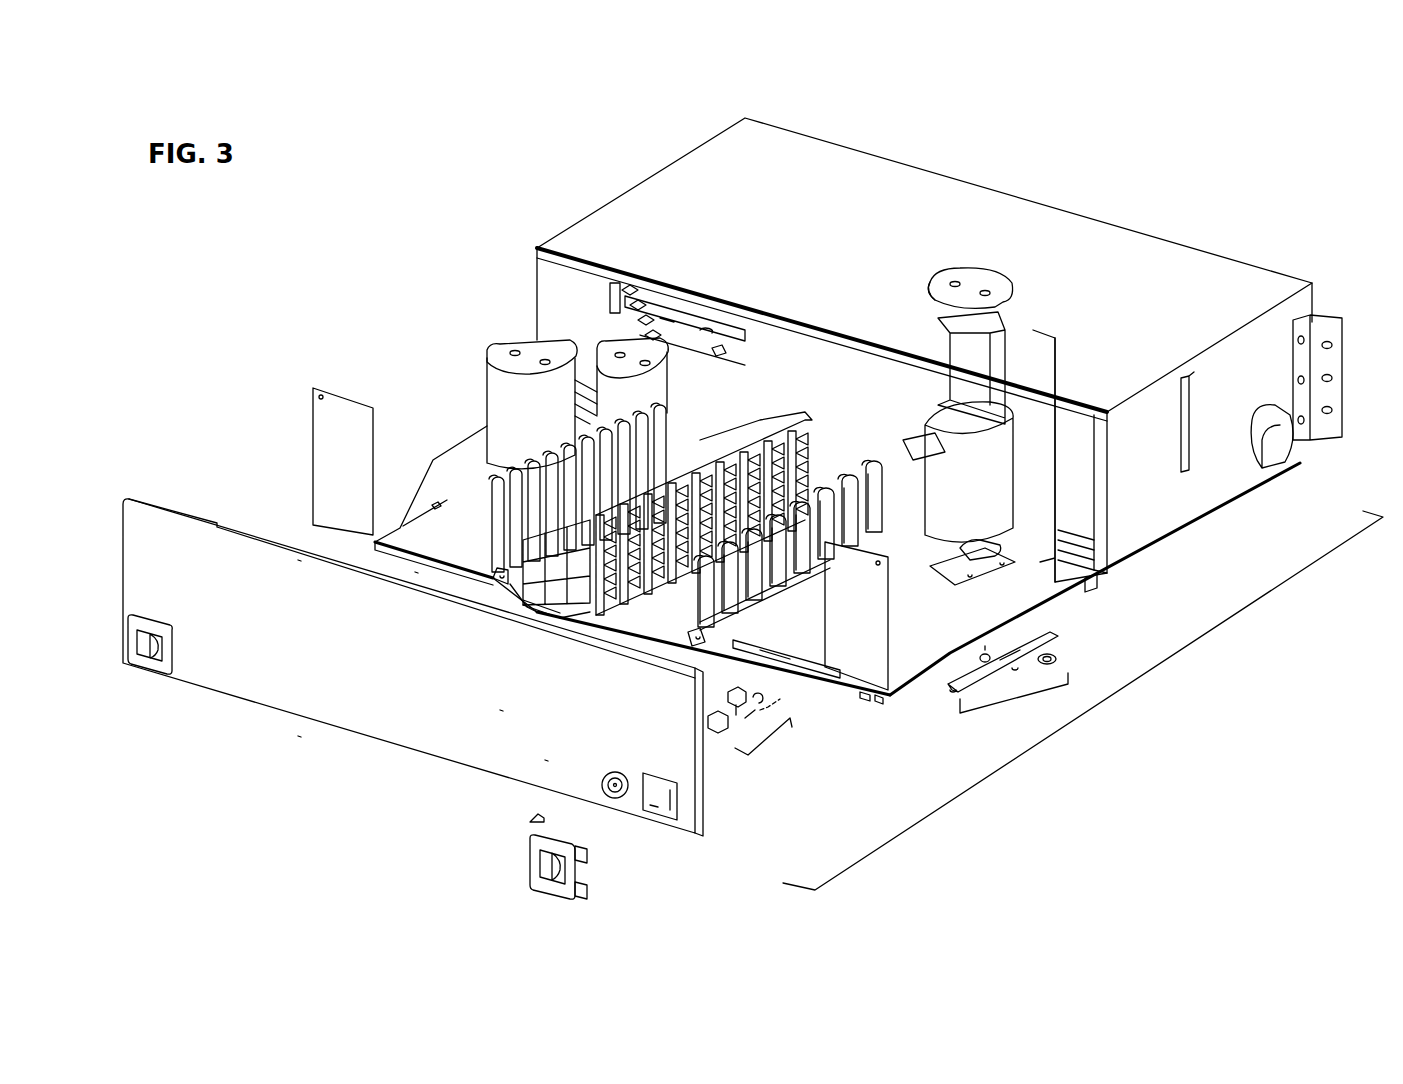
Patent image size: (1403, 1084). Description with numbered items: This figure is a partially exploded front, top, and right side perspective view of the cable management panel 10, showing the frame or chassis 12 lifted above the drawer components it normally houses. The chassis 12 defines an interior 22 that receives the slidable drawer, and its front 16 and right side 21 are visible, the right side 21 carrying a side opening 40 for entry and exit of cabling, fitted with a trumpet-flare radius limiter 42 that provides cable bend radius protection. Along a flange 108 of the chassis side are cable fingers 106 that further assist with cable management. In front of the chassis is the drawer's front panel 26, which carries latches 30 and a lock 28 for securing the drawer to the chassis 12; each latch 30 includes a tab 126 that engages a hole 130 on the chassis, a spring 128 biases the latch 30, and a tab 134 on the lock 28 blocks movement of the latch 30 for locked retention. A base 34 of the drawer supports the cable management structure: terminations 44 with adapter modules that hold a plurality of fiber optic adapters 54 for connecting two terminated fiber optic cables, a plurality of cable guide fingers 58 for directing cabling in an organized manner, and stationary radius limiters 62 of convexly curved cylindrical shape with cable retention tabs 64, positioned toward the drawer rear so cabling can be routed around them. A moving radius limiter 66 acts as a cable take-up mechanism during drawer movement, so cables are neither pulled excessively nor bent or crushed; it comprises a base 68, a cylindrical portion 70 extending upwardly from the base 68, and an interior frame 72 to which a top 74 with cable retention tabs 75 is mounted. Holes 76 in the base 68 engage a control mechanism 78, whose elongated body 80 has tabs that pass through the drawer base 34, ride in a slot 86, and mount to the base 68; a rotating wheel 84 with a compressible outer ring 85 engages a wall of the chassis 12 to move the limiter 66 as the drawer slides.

The cable management panel 10 is at (1117, 697).
The chassis 12 is at (886, 180).
The front 16 is at (598, 282).
The right side 21 is at (1163, 513).
The interior 22 is at (805, 388).
The front panel 26 is at (400, 750).
The lock 28 is at (620, 803).
The latch 30 is at (145, 676).
The base 34 is at (392, 550).
The side opening 40 is at (1316, 474).
The radius limiter 42 is at (1270, 463).
The terminations 44 is at (550, 612).
The fiber optic adapters 54 is at (618, 538).
The cable guide fingers 58 is at (515, 521).
The stationary radius limiter 62 is at (607, 381).
The cable retention tabs 64 is at (602, 342).
The moving radius limiter 66 is at (497, 387).
The base 68 is at (975, 588).
The cylindrical portion 70 is at (983, 497).
The interior frame 72 is at (988, 375).
The top 74 is at (990, 284).
The cable retention tabs 75 is at (937, 283).
The holes 76 is at (992, 552).
The control mechanism 78 is at (985, 650).
The elongated body 80 is at (1008, 665).
The rotating wheel 84 is at (1058, 660).
The compressible outer ring 85 is at (1050, 654).
The slot 86 is at (891, 635).
The cable fingers 106 is at (672, 307).
The flange 108 is at (1179, 428).
The tab 126 is at (578, 891).
The spring 128 is at (528, 821).
The hole 130 is at (1092, 580).
The tab 134 is at (736, 702).